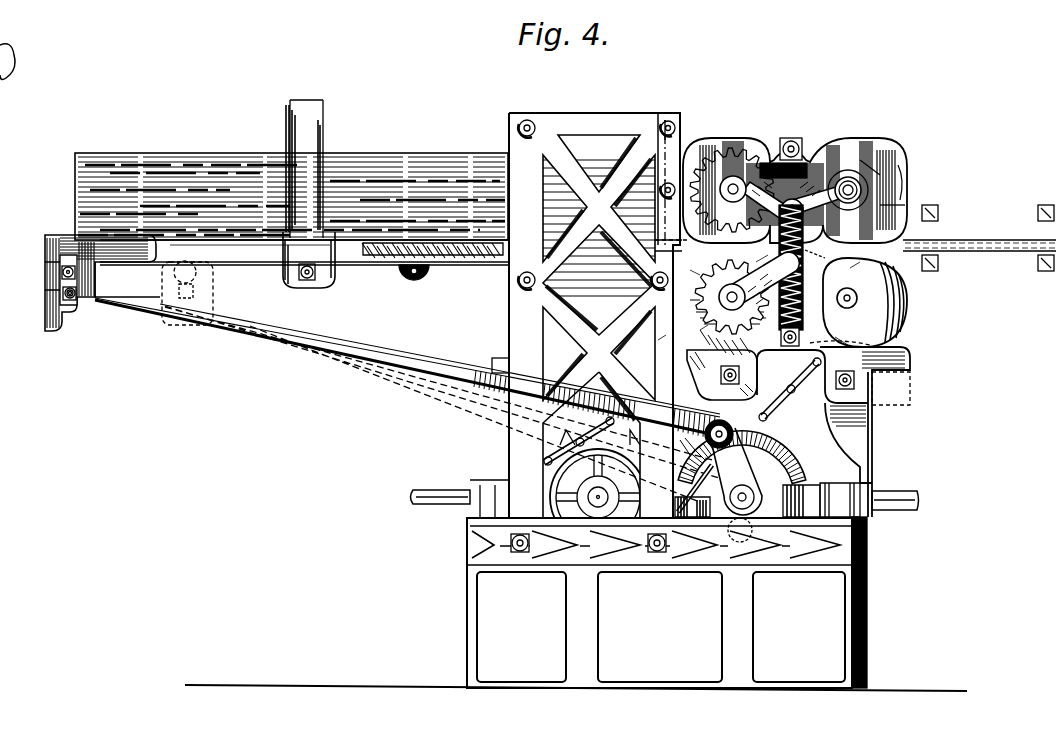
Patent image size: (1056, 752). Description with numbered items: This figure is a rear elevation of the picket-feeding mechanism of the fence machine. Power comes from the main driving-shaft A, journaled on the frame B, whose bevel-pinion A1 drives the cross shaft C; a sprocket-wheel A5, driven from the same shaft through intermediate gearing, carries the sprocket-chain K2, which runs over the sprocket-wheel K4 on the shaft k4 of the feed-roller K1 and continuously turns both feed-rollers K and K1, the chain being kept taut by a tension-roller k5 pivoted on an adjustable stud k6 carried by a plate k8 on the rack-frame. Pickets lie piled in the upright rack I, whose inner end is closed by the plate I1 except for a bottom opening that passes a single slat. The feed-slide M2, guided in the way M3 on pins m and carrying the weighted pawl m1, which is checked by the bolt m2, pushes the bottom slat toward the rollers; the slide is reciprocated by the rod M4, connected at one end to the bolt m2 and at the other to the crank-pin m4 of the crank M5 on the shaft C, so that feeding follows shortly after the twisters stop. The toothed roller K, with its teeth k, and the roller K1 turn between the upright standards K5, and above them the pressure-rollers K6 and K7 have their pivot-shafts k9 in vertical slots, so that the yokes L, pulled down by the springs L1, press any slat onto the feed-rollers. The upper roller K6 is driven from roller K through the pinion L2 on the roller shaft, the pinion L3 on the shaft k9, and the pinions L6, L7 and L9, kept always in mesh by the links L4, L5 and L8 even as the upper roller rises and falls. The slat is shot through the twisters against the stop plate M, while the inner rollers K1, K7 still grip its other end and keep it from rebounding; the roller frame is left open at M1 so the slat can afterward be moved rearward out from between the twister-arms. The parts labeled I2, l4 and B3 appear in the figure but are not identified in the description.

The upright rack I is at (345, 275).
The standard post I2 is at (309, 194).
The plate or piece I1 is at (672, 238).
The upright plate M is at (440, 262).
The opening M1 is at (905, 272).
The feed-slide M2 is at (145, 262).
The way M3 is at (392, 265).
The rod M4 is at (421, 400).
The crank M5 is at (767, 472).
The pins or bolts m is at (417, 280).
The pawl m1 is at (44, 280).
The bolt m2 is at (76, 300).
The crank-pin m4 is at (721, 425).
The feed-roller K is at (675, 315).
The feed-roller K1 is at (895, 318).
The sprocket-chain K2 is at (790, 395).
The sprocket-wheel K4 is at (664, 186).
The upright plates or standards K5 is at (833, 432).
The roller K6 is at (672, 127).
The roller K7 is at (898, 172).
The teeth k is at (700, 330).
The shaft k4 is at (847, 310).
The tension-roller k5 is at (715, 330).
The stud k6 is at (849, 176).
The plate k8 is at (735, 160).
The pivot-shafts k9 is at (862, 180).
The yoke L is at (812, 180).
The spring L1 is at (728, 374).
The pinion L2 is at (699, 267).
The pinion L3 is at (722, 138).
The plates or links L4 is at (744, 303).
The parallel plates or links L5 is at (827, 256).
The pinion L6 is at (863, 267).
The pinion L7 is at (750, 251).
The plates or links L8 is at (836, 341).
The pinion L9 is at (895, 205).
The spring l4 is at (784, 275).
The main driving-shaft A is at (665, 494).
The bevel-pinion A1 is at (686, 444).
The sprocket-wheel A5 is at (594, 481).
The frame B is at (658, 602).
The rail B3 is at (855, 230).
The shaft C is at (738, 542).